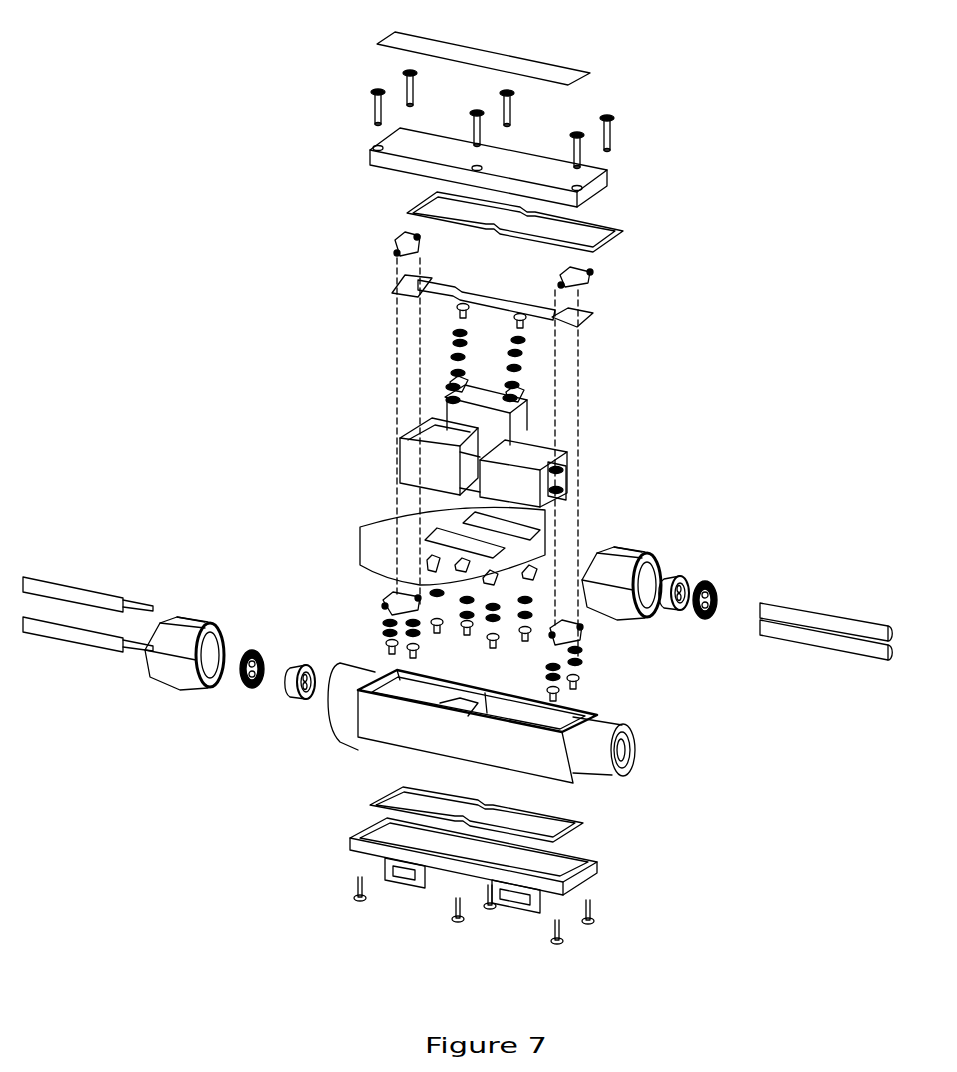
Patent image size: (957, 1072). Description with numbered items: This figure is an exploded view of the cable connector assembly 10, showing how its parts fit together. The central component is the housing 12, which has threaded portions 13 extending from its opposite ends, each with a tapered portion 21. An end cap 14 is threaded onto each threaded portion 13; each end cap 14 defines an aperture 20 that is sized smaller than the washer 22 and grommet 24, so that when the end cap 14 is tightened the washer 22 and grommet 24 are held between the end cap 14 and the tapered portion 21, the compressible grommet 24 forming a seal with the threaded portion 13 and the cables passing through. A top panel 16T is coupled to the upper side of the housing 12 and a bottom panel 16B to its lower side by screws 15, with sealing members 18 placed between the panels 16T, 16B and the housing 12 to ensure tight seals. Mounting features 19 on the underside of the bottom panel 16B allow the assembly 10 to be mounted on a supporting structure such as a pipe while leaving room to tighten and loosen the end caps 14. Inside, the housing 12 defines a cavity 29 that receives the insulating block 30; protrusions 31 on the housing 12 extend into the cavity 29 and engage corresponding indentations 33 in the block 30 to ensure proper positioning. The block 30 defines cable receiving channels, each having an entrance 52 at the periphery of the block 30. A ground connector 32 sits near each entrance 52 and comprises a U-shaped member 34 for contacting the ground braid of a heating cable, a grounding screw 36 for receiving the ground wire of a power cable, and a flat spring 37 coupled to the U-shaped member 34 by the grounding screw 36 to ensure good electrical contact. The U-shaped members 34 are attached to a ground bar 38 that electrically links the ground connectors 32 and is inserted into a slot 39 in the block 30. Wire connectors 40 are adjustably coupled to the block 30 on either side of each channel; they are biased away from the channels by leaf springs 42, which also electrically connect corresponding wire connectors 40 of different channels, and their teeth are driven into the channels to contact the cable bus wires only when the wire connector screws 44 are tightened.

The cable connector assembly 10 is at (165, 185).
The housing 12 is at (563, 780).
The threaded portions 13 is at (340, 720).
The end caps 14 is at (178, 686).
The screws 15 is at (403, 77).
The top panel 16T is at (605, 195).
The bottom panel 16B is at (587, 870).
The sealing members 18 is at (615, 238).
The mounting features 19 is at (413, 887).
The aperture 20 is at (660, 582).
The tapered portion 21 is at (630, 737).
The washers 22 is at (247, 690).
The grommets 24 is at (290, 700).
The cavity 29 is at (590, 700).
The insulating block 30 is at (397, 497).
The protrusions 31 is at (463, 705).
The ground connector 32 is at (373, 248).
The indentations 33 is at (397, 445).
The U-shaped member 34 is at (400, 256).
The grounding screw 36 is at (407, 228).
The flat spring 37 is at (410, 233).
The ground bar 38 is at (575, 318).
The slot 39 is at (420, 458).
The wire connectors 40 is at (452, 362).
The leaf springs 42 is at (440, 405).
The wire connector screws 44 is at (767, 397).
The entrance 52 is at (577, 490).